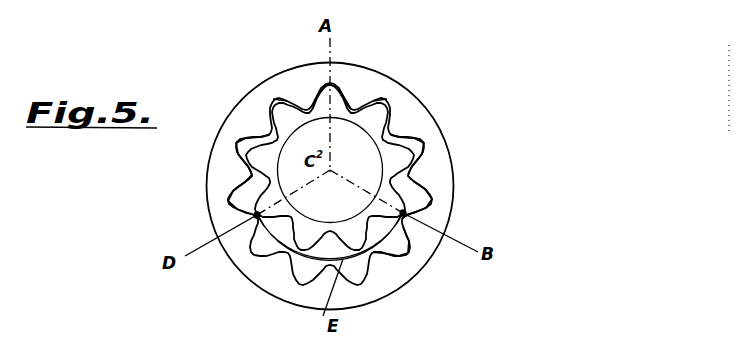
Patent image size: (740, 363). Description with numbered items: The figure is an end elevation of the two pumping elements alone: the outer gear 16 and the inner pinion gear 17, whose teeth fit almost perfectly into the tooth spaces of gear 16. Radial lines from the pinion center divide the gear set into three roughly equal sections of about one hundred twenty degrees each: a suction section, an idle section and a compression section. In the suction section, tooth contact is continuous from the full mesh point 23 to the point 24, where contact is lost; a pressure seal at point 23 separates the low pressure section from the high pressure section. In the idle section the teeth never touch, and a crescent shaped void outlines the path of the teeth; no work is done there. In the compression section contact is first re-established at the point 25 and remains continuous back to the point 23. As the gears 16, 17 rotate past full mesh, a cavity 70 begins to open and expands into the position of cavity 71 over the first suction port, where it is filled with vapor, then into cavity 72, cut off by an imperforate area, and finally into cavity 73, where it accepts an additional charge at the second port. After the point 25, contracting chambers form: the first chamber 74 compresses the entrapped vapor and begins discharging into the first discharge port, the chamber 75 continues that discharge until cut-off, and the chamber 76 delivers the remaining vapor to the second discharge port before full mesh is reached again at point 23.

The outer gear 16 is at (413, 121).
The inner gear 17 is at (262, 163).
The full mesh point 23 is at (311, 76).
The contact loss point 24 is at (405, 213).
The contact re-establishment point 25 is at (255, 215).
The cavity 70 is at (380, 101).
The cavity 71 is at (420, 144).
The cavity 72 is at (426, 190).
The cavity 73 is at (400, 253).
The chamber 74 is at (232, 199).
The chamber 75 is at (240, 146).
The chamber 76 is at (273, 99).